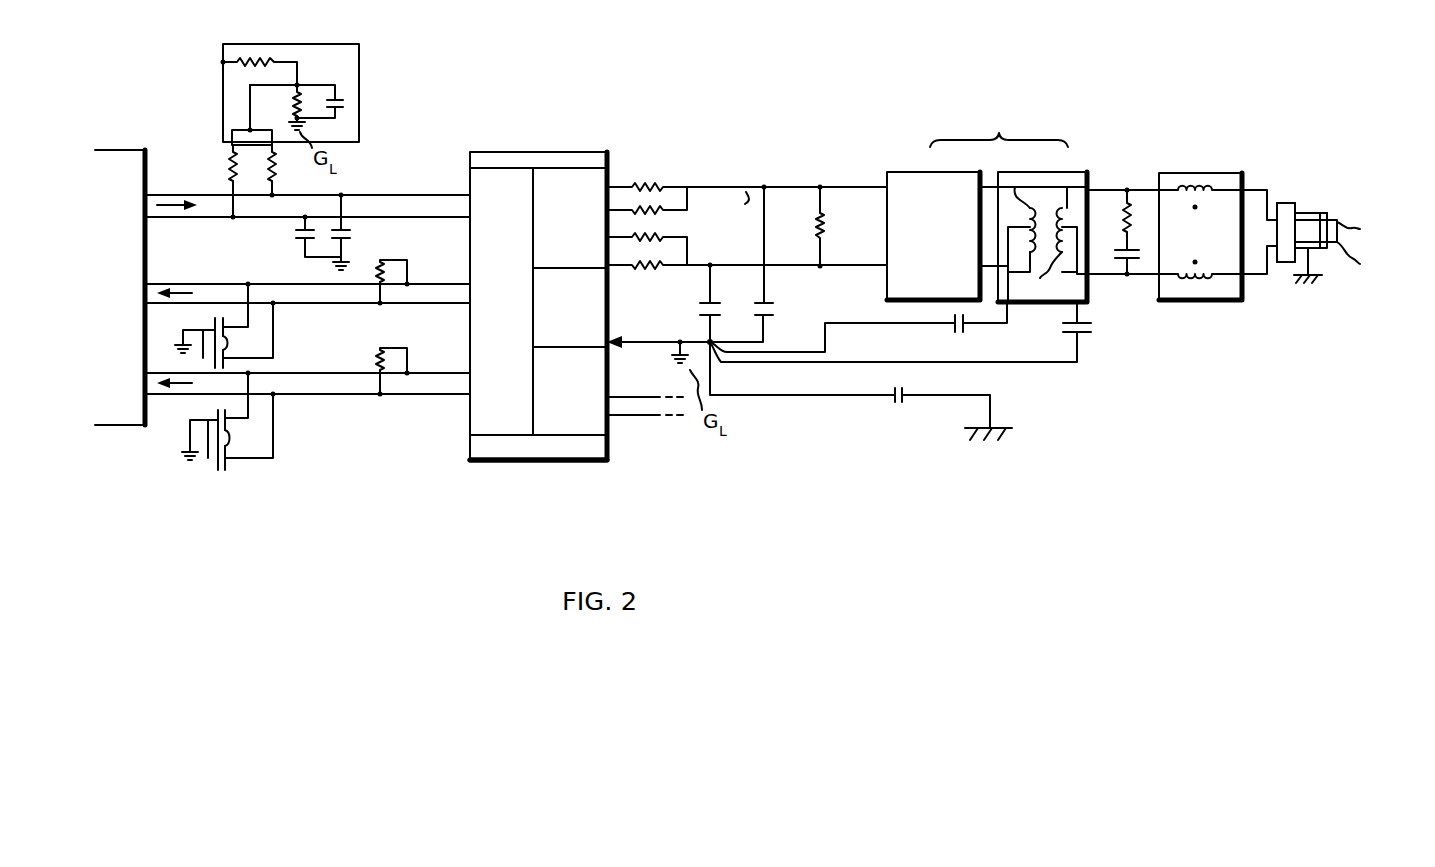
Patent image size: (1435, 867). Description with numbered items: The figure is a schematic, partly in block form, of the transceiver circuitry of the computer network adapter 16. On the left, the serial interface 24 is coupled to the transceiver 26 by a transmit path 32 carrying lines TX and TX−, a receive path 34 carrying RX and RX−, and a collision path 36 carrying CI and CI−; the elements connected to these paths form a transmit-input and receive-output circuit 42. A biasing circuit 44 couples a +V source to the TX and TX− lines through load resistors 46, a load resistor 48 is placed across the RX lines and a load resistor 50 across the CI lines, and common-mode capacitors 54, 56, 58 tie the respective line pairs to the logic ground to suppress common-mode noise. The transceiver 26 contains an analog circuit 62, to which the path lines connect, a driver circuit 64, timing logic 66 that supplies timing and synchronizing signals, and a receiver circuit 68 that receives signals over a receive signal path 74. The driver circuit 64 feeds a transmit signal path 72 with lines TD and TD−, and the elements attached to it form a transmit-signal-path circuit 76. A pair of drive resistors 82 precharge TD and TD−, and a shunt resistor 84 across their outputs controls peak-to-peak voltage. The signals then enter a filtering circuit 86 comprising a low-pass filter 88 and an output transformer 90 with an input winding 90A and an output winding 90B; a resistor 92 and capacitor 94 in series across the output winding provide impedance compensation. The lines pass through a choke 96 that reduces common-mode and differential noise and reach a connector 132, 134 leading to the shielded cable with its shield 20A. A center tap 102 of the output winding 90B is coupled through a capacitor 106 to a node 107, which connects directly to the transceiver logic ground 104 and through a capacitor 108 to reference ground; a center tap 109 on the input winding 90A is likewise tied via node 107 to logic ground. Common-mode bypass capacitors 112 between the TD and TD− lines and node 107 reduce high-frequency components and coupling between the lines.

The computer network adapter 16 is at (1058, 518).
The shield 20A is at (1296, 216).
The serial interface 24 is at (94, 335).
The transceiver 26 is at (552, 463).
The transmit path 32 is at (461, 213).
The receive path 34 is at (466, 333).
The collision path 36 is at (450, 427).
The transmit-input and receive-output circuit 42 is at (331, 458).
The biasing circuit 44 is at (380, 60).
The load resistors 46 is at (234, 150).
The load resistor 48 is at (380, 262).
The load resistor 50 is at (379, 356).
The common-mode capacitors 54 is at (307, 242).
The common-mode capacitors 56 is at (230, 336).
The common-mode capacitors 58 is at (232, 462).
The analog circuit 62 is at (520, 193).
The driver circuit 64 is at (573, 244).
The timing logic 66 is at (576, 344).
The receiver circuit 68 is at (576, 411).
The transmit signal path 72 is at (696, 265).
The receive signal path 74 is at (636, 417).
The transmit-signal-path circuit 76 is at (1118, 158).
The drive resistors 82 is at (637, 187).
The shunt resistor 84 is at (826, 226).
The filtering circuit 86 is at (1029, 136).
The filter 88 is at (941, 256).
The output transformer 90 is at (1058, 303).
The input winding 90A is at (1038, 238).
The output winding 90B is at (1059, 242).
The resistor 92 is at (1124, 216).
The capacitor 94 is at (1120, 262).
The choke 96 is at (1214, 257).
The center tap 102 is at (1067, 208).
The logic ground 104 is at (622, 323).
The capacitor 106 is at (1081, 336).
The node 107 is at (716, 328).
The capacitor 108 is at (904, 395).
The center tap 109 is at (1020, 223).
The common-mode bypass capacitors 112 is at (756, 300).
The connector 132 is at (1287, 204).
The connector 134 is at (1301, 208).